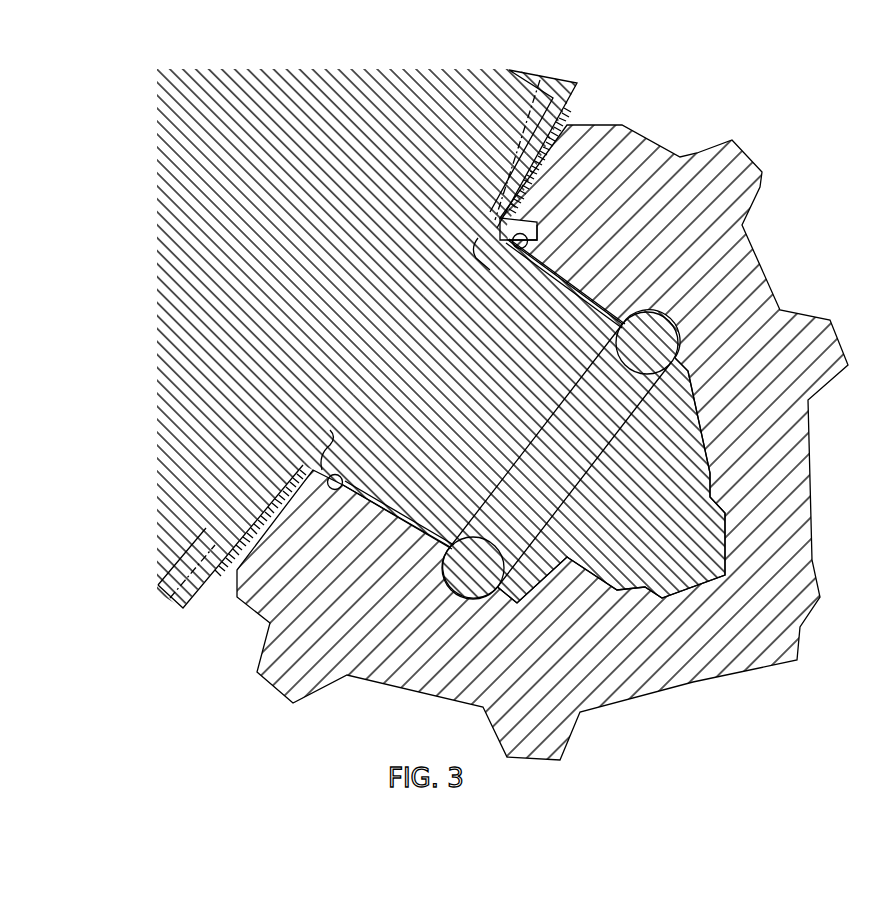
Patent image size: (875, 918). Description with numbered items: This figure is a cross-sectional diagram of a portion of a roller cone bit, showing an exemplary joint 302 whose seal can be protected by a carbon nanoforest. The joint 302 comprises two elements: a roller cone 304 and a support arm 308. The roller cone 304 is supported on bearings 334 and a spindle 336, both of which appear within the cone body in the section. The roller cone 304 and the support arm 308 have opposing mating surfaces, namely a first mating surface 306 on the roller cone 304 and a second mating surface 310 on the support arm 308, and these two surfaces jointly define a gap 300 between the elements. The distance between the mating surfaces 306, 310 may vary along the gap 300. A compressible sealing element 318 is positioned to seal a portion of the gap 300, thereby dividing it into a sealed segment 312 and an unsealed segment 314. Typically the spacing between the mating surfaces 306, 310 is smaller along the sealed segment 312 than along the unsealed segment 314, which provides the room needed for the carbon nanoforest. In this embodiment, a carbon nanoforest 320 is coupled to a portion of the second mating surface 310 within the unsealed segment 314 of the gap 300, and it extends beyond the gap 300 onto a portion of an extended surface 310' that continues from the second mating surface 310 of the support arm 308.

The joint 302 is at (792, 91).
The roller cone 304 is at (750, 385).
The first mating surface 306 is at (540, 194).
The support arm 308 is at (284, 295).
The second mating surface 310 is at (458, 254).
The extended surface 310' is at (347, 319).
The sealed segment 312 is at (408, 503).
The unsealed segment 314 is at (327, 462).
The compressible sealing element 318 is at (513, 250).
The carbon nanoforest 320 is at (521, 160).
The gap 300 is at (548, 310).
The bearings 334 is at (632, 355).
The spindle 336 is at (660, 518).